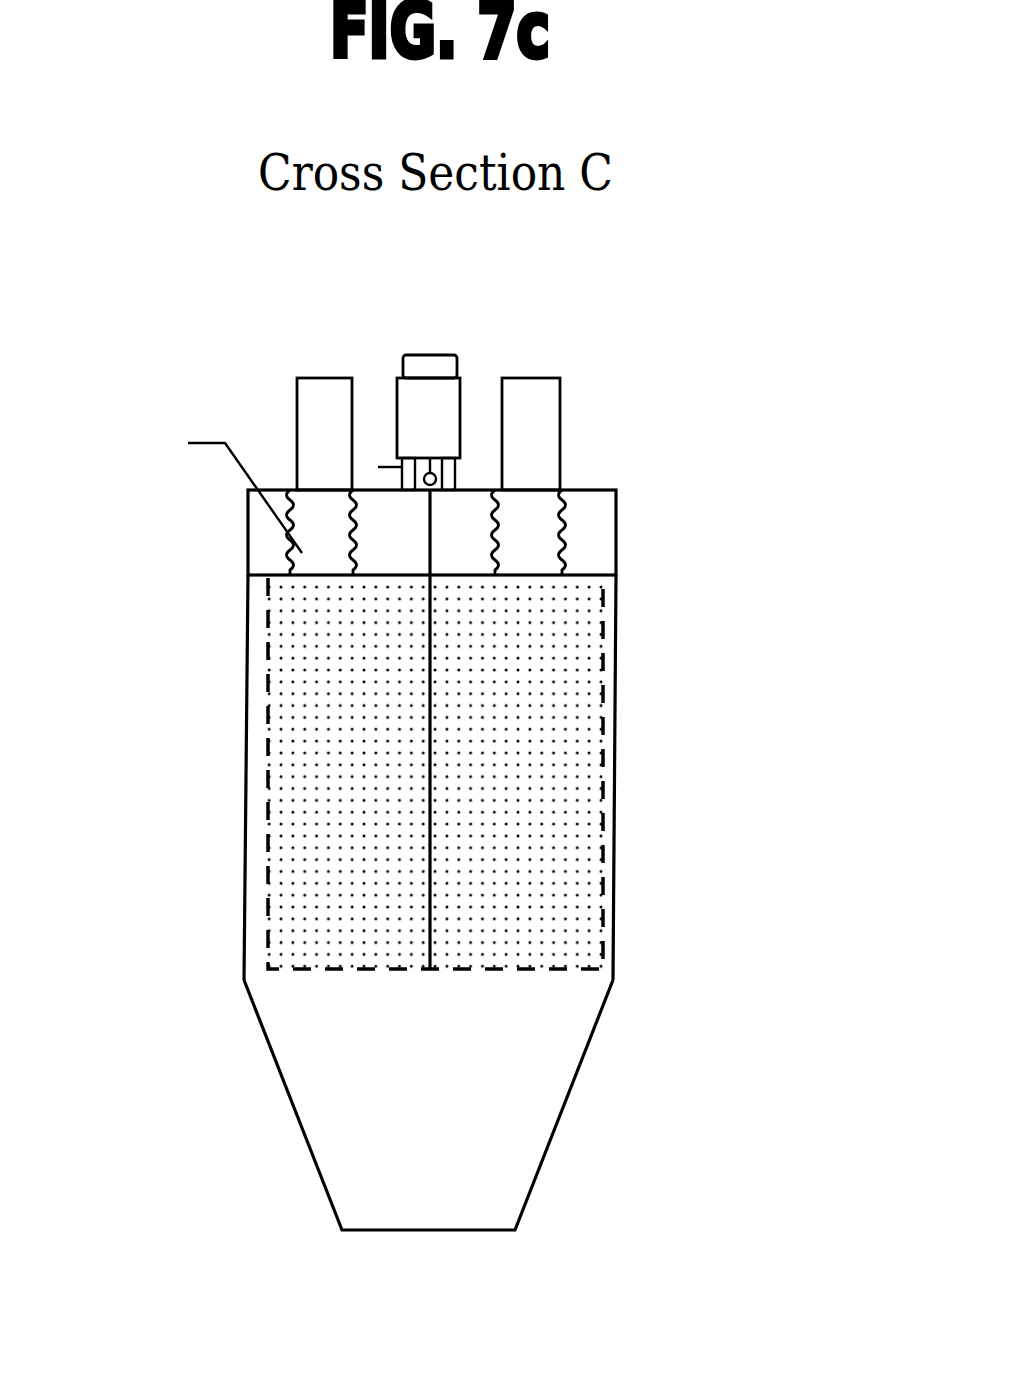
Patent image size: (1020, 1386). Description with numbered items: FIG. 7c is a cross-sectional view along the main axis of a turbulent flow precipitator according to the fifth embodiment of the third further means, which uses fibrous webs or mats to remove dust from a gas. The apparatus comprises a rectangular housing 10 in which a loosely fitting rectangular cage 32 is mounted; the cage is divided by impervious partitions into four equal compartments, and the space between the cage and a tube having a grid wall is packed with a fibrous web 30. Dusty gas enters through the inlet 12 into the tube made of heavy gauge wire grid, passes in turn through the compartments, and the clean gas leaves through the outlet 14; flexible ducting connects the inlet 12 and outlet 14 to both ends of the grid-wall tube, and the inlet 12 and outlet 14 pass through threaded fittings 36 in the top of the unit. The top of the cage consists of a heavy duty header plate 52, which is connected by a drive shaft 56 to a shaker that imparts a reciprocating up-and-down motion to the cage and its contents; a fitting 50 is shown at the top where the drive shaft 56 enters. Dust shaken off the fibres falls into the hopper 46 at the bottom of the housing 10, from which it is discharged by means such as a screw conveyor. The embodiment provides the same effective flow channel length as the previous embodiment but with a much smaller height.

The housing 10 is at (358, 750).
The inlet 12 is at (588, 390).
The outlet 14 is at (247, 392).
The packed bed 30 is at (355, 776).
The cage 32 is at (545, 773).
The threaded fittings 36 is at (454, 472).
The hopper 46 is at (534, 1095).
The sensor fitting 50 is at (507, 369).
The header plate 52 is at (482, 526).
The drive shaft 56 is at (284, 604).